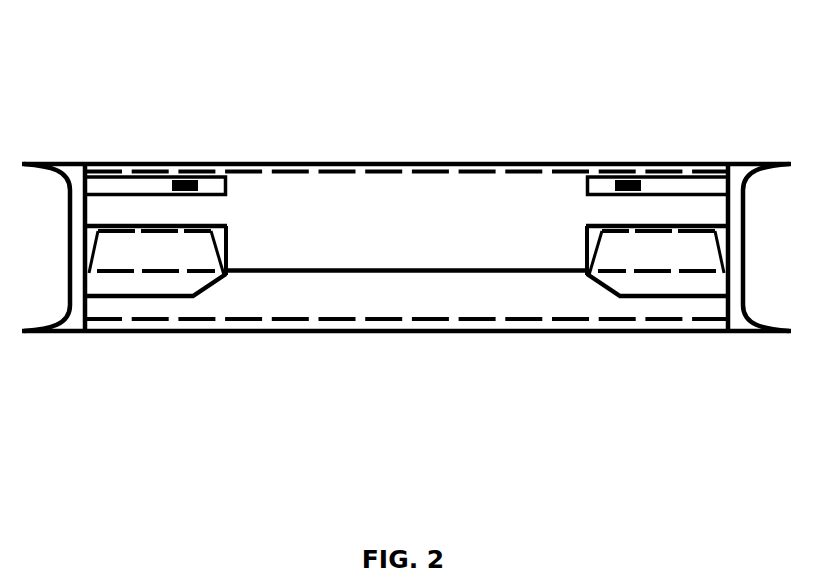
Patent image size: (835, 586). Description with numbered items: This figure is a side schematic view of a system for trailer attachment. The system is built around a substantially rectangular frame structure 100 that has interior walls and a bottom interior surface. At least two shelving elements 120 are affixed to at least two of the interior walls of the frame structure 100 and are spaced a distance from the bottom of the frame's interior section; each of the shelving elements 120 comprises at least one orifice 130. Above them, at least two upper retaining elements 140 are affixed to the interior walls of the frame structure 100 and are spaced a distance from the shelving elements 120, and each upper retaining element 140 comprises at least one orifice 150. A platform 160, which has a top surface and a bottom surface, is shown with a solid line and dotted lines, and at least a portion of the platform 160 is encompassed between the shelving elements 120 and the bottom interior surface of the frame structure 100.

The substantially rectangular frame structure 100 is at (375, 128).
The shelving elements 120 is at (210, 287).
The orifice 130 is at (183, 222).
The upper retaining elements 140 is at (110, 183).
The orifice 150 is at (189, 185).
The platform 160 is at (399, 273).